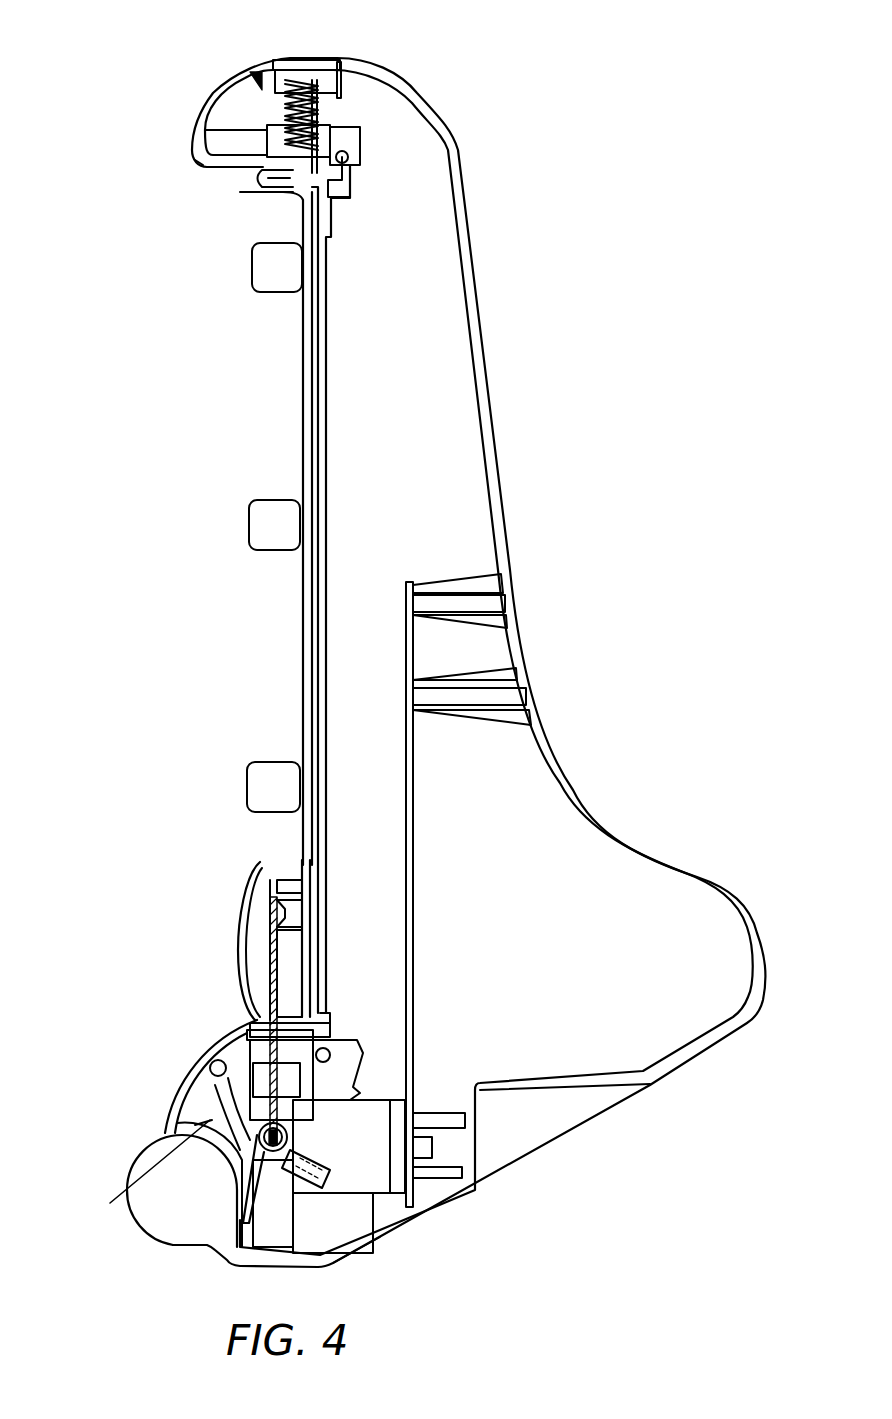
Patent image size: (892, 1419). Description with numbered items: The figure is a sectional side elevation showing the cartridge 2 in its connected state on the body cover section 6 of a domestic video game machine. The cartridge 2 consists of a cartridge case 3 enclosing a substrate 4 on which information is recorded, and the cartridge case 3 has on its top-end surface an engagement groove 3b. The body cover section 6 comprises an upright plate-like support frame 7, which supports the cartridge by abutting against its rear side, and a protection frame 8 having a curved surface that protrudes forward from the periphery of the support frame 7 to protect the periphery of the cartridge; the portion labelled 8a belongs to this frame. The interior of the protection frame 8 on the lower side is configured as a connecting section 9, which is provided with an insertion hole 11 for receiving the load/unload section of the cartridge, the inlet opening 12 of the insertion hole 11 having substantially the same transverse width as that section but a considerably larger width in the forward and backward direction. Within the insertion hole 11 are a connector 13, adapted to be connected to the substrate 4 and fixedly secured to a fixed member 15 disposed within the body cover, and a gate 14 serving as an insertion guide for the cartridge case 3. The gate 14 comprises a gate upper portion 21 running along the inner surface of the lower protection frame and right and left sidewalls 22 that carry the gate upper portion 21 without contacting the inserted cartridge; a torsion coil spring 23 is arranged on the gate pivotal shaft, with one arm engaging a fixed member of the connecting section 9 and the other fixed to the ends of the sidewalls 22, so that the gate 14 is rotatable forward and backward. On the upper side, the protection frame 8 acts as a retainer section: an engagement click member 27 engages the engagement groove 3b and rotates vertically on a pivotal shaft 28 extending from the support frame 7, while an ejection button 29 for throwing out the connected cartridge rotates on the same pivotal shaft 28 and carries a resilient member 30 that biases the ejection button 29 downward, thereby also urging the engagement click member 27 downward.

The cartridge 2 is at (300, 395).
The cartridge case 3 is at (244, 938).
The engagement groove 3b is at (290, 188).
The substrate 4 is at (227, 1003).
The body cover section 6 is at (514, 348).
The support frame 7 is at (327, 322).
The protection frame 8 is at (242, 75).
The upper lever portion 8a is at (345, 43).
The connecting section 9 is at (128, 998).
The insertion hole 11 is at (110, 1203).
The inlet opening 12 is at (222, 1040).
The connector 13 is at (373, 1120).
The gate 14 is at (112, 1022).
The fixed member 15 is at (428, 1203).
The gate upper portion 21 is at (220, 1057).
The sidewalls 22 is at (210, 1080).
The torsion coil spring 23 is at (325, 1183).
The engagement click member 27 is at (275, 178).
The pivotal shaft 28 is at (349, 156).
The ejection button 29 is at (200, 158).
The resilient member 30 is at (320, 113).